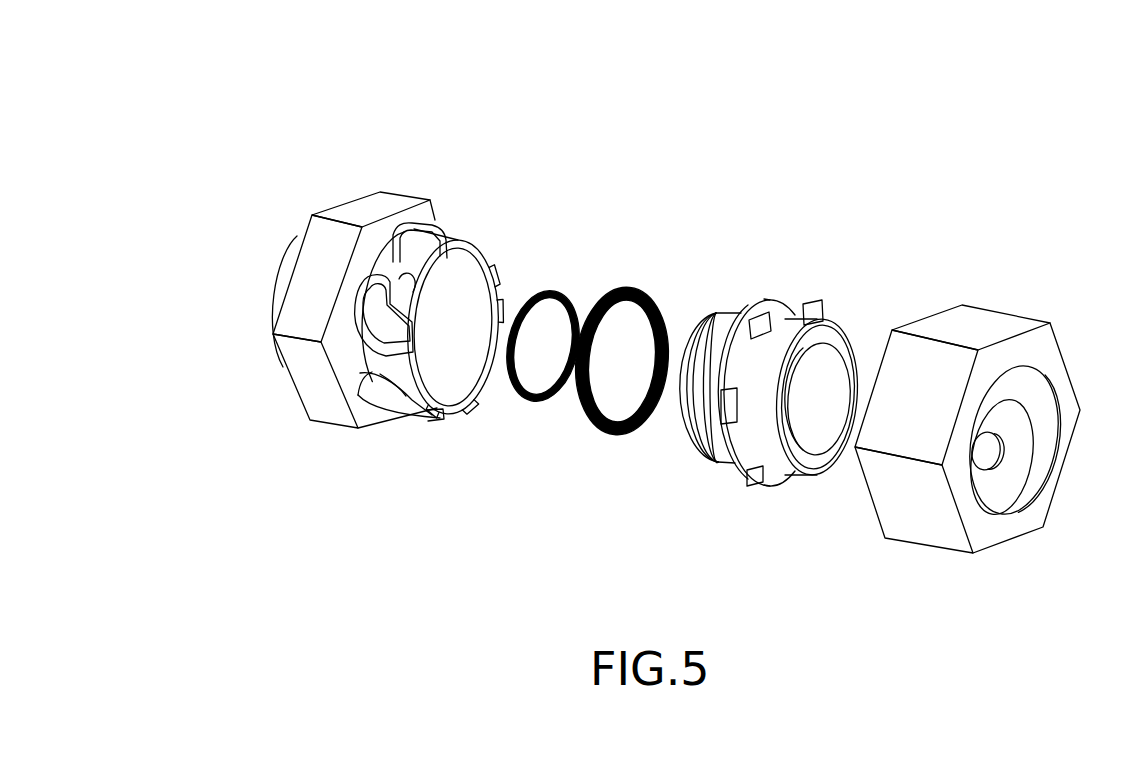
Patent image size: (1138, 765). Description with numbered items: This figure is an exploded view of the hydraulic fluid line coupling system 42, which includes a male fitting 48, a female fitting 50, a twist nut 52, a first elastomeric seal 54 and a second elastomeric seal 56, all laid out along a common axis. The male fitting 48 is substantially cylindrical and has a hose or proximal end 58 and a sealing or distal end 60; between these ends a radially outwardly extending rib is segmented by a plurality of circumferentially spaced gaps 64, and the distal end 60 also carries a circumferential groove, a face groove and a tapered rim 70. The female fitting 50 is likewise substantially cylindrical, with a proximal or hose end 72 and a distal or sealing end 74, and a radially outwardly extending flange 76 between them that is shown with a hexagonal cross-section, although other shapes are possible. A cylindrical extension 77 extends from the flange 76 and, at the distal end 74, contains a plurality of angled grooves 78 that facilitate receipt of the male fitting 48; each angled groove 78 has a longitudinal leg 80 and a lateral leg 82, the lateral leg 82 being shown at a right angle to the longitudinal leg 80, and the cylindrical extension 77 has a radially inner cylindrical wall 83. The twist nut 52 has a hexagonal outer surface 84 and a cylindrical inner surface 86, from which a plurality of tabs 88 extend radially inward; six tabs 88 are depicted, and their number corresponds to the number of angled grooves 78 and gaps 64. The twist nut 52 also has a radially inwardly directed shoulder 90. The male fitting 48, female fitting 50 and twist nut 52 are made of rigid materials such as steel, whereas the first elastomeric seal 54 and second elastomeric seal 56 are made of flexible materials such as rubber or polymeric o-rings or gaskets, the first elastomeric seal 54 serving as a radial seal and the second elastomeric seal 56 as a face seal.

The hydraulic fluid line coupling system 42 is at (841, 118).
The male fitting 48 is at (815, 287).
The female fitting 50 is at (480, 205).
The twist nut 52 is at (1020, 292).
The first elastomeric seal 54 is at (659, 302).
The second elastomeric seal 56 is at (568, 300).
The proximal end 58 is at (848, 338).
The distal end 60 is at (730, 313).
The gaps 64 is at (728, 407).
The tapered rim 70 is at (688, 396).
The proximal end 72 is at (290, 258).
The distal end 74 is at (505, 275).
The flange 76 is at (377, 202).
The cylindrical extension 77 is at (403, 283).
The angled grooves 78 is at (424, 341).
The longitudinal leg 80 is at (390, 342).
The lateral leg 82 is at (372, 307).
The radially inner cylindrical wall 83 is at (461, 377).
The hexagonal outer surface 84 is at (927, 415).
The cylindrical inner surface 86 is at (1003, 480).
The tabs 88 is at (988, 452).
The shoulder 90 is at (1022, 495).